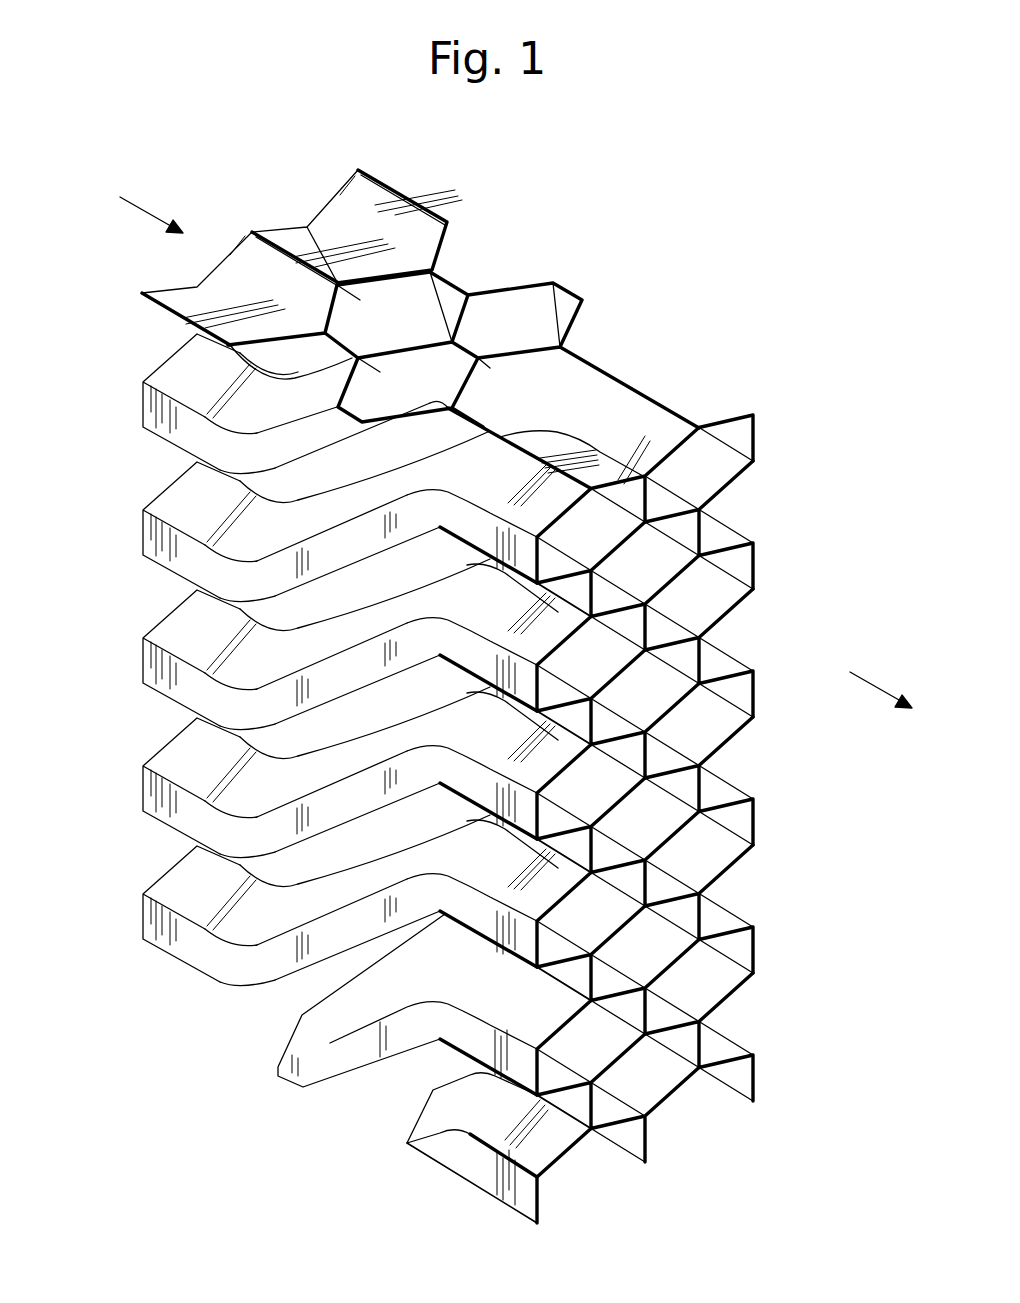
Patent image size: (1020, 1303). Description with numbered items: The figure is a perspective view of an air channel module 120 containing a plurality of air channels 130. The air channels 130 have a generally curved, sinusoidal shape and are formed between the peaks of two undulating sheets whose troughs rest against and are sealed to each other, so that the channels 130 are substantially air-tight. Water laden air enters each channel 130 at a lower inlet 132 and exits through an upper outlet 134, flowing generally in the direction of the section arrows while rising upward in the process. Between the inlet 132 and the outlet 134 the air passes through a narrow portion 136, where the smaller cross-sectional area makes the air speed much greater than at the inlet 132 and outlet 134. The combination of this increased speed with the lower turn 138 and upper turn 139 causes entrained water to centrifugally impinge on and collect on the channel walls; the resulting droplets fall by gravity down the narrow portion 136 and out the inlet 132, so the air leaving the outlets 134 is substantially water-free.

The air channel module 120 is at (791, 385).
The air channels 130 is at (722, 983).
The lower inlet 132 is at (152, 921).
The upper outlet 134 is at (530, 1070).
The narrow portion 136 is at (347, 1030).
The lower turn 138 is at (248, 949).
The upper turn 139 is at (449, 1006).